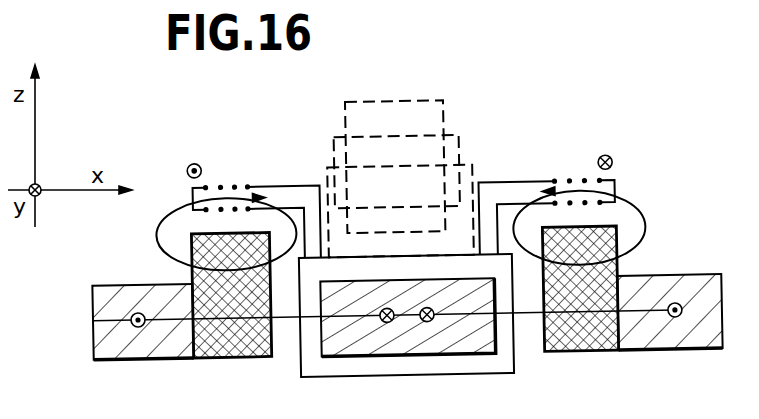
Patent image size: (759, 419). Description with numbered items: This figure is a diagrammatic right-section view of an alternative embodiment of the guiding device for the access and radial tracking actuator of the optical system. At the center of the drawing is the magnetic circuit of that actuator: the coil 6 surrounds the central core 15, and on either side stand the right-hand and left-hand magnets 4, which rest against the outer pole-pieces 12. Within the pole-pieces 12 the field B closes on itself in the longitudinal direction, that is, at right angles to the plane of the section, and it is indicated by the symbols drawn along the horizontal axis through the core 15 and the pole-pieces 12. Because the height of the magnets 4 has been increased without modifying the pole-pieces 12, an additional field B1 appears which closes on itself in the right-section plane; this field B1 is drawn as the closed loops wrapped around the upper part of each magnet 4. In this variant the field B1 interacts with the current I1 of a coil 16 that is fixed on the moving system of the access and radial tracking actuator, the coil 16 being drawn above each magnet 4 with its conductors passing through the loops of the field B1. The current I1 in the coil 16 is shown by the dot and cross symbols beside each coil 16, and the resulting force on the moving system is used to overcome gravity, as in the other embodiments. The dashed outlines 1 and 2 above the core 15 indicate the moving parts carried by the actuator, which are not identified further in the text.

The first magnetic member 1 is at (397, 113).
The second magnetic member 2 is at (463, 150).
The magnets 4 is at (215, 357).
The coil 6 is at (378, 378).
The pole-pieces 12 is at (93, 324).
The central core 15 is at (474, 336).
The coil 16 is at (227, 184).
The field B is at (255, 357).
The field B1 is at (660, 247).
The current I1 is at (627, 159).